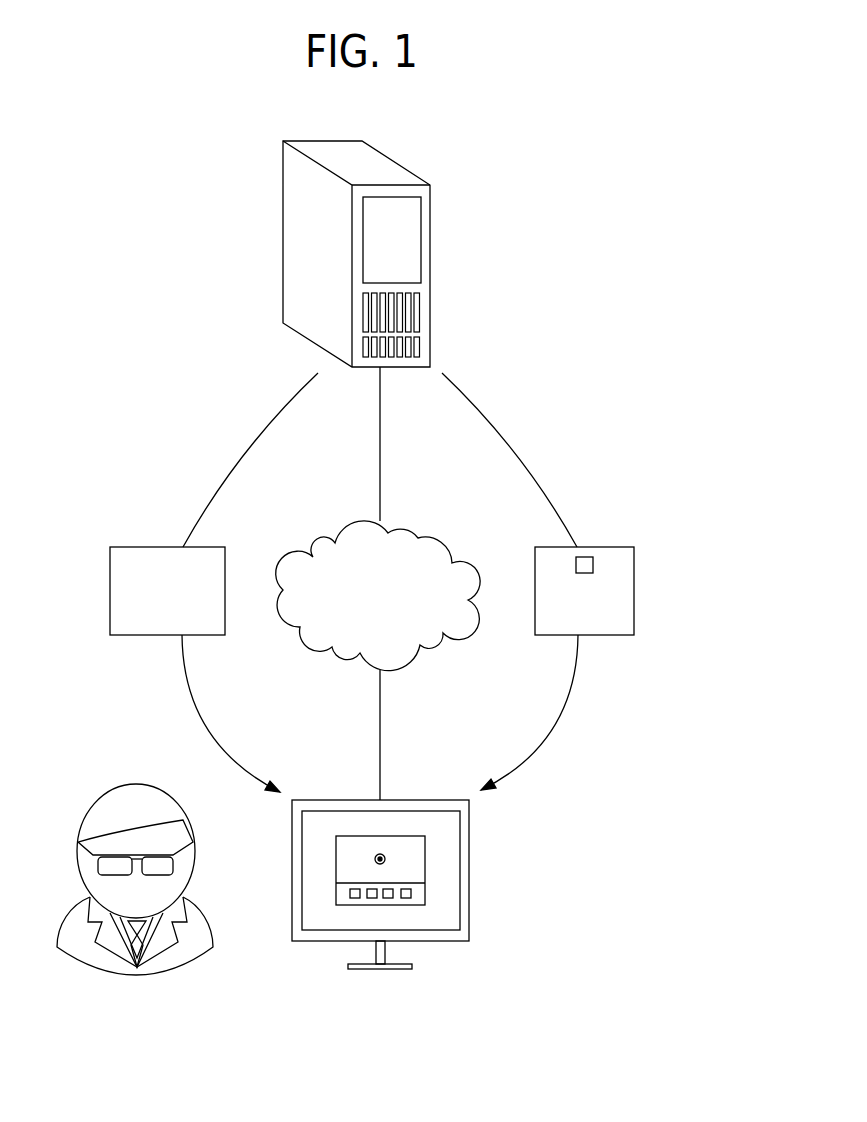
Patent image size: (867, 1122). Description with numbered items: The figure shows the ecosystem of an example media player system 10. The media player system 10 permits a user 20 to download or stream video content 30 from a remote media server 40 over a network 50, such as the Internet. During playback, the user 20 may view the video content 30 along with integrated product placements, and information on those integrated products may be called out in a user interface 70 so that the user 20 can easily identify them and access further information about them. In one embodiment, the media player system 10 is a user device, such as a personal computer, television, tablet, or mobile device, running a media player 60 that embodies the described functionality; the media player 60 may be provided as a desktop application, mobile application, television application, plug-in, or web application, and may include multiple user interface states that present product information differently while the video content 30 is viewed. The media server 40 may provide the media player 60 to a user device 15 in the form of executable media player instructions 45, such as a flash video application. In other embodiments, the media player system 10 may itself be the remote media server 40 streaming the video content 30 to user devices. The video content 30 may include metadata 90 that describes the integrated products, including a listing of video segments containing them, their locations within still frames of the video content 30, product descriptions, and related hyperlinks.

The media player system 10 is at (430, 233).
The user device 15 is at (438, 941).
The user 20 is at (130, 975).
The video content 30 is at (634, 588).
The remote media server 40 is at (430, 295).
The executable media player instructions 45 is at (110, 593).
The network 50 is at (302, 640).
The media player 60 is at (425, 855).
The user interface 70 is at (447, 910).
The metadata 90 is at (585, 557).